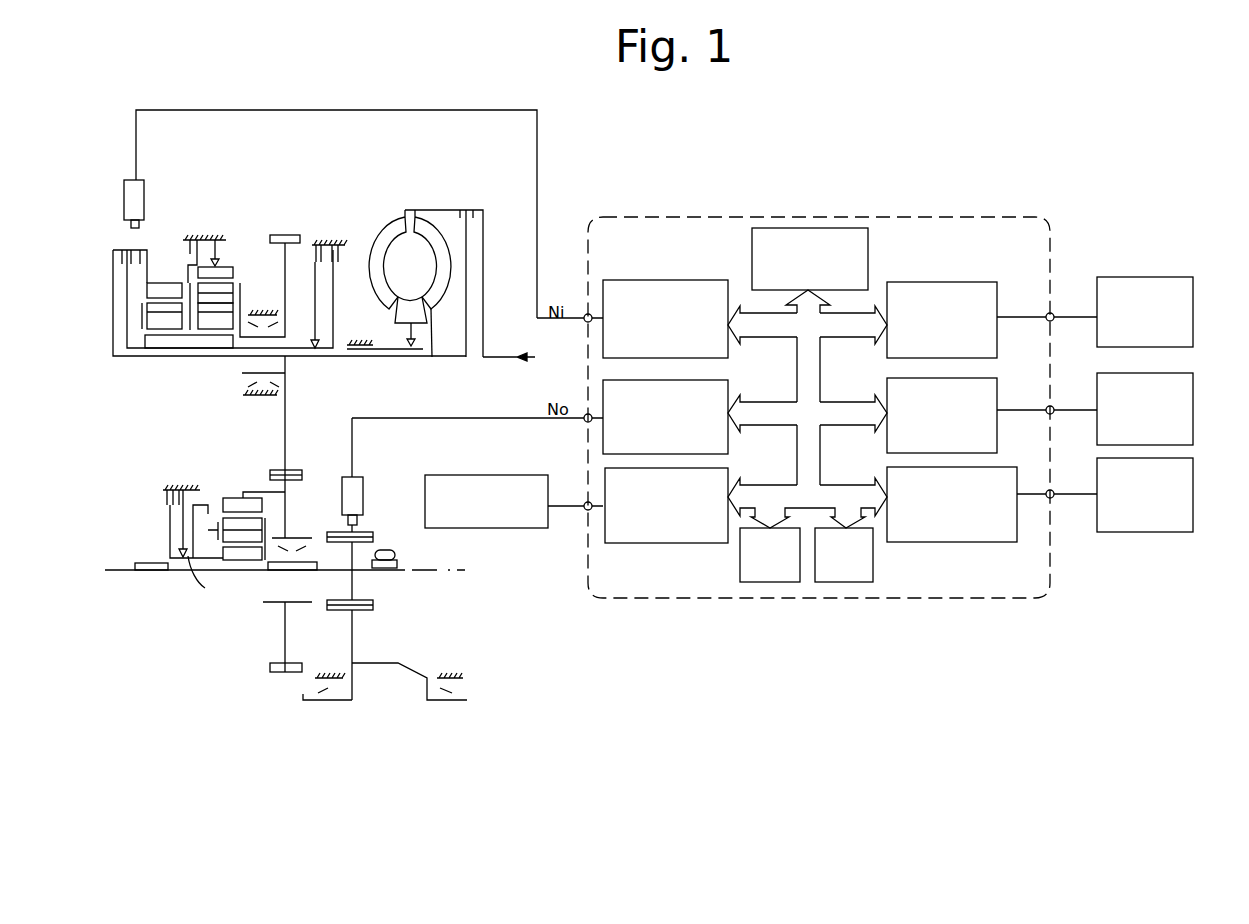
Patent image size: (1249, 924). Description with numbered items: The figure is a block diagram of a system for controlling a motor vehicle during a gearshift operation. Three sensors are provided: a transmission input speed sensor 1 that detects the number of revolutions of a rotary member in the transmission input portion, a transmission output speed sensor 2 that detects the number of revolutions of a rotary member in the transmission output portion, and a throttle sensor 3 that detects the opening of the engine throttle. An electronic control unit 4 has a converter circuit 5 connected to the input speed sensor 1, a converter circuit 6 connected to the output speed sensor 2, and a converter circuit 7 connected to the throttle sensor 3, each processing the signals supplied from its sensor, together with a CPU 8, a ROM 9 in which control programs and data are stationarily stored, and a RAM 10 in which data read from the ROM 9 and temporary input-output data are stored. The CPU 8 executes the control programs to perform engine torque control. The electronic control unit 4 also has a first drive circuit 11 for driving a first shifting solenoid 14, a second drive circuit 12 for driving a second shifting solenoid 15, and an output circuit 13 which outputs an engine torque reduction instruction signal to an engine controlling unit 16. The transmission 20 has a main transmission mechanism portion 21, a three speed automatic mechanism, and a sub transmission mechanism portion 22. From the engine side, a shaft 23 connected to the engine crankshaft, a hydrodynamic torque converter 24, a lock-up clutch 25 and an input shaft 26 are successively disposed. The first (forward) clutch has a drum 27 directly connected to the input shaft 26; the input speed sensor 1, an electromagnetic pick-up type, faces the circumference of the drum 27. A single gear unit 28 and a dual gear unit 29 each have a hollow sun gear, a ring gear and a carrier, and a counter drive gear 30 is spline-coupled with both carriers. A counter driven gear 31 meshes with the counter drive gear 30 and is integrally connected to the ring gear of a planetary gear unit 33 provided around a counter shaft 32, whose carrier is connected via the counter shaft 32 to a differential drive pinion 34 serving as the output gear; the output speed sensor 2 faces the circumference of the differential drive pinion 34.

The transmission input speed sensor 1 is at (143, 180).
The transmission output speed sensor 2 is at (358, 477).
The throttle position sensor 3 is at (537, 528).
The electronic control unit 4 is at (1020, 222).
The converter circuit 5 is at (714, 279).
The converter circuit 6 is at (728, 381).
The converter circuit 7 is at (730, 470).
The CPU 8 is at (869, 252).
The ROM 9 is at (739, 563).
The RAM 10 is at (873, 572).
The first drive circuit 11 is at (996, 282).
The second drive circuit 12 is at (997, 378).
The output circuit 13 is at (1015, 467).
The first shifting solenoid 14 is at (1177, 277).
The second shifting solenoid 15 is at (1195, 374).
The engine controlling unit 16 is at (1162, 532).
The transmission 20 is at (380, 108).
The main transmission mechanism portion 21 is at (133, 375).
The sub transmission mechanism portion 22 is at (133, 507).
The shaft 23 is at (501, 358).
The hydrodynamic torque converter 24 is at (400, 208).
The lock-up clutch 25 is at (465, 208).
The input shaft 26 is at (200, 356).
The drum 27 is at (150, 248).
The single gear unit 28 is at (163, 275).
The dual gear unit 29 is at (240, 262).
The counter drive gear 30 is at (286, 233).
The counter driven gear 31 is at (287, 672).
The counter shaft 32 is at (167, 580).
The planetary gear unit 33 is at (238, 493).
The differential drive pinion 34 is at (370, 531).